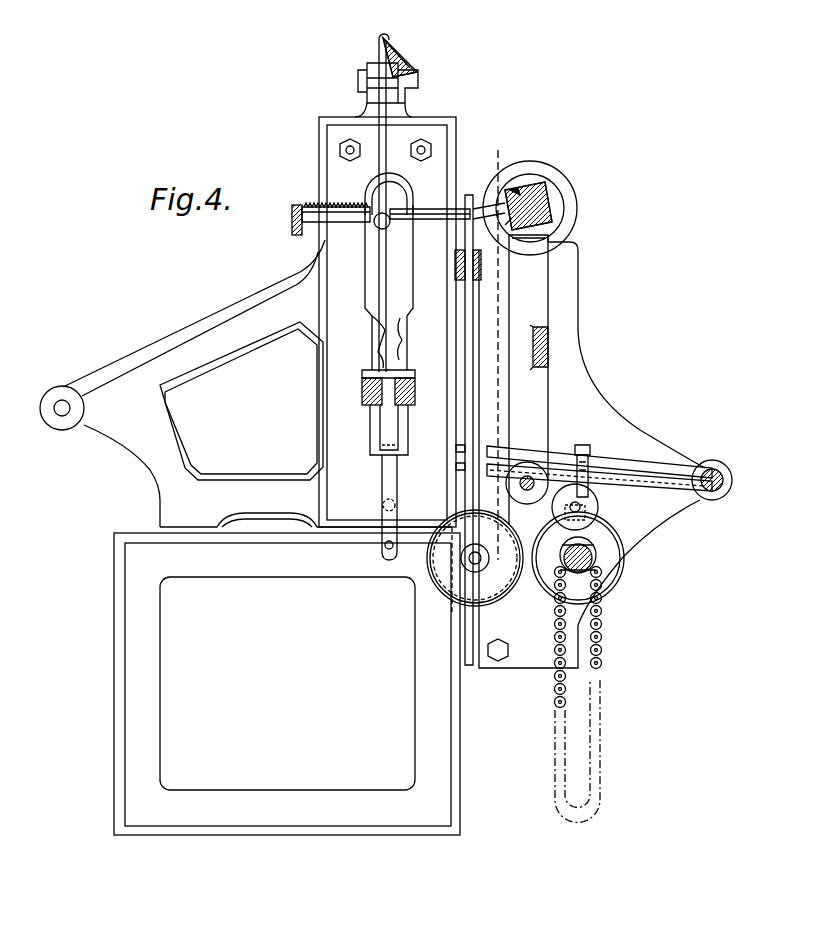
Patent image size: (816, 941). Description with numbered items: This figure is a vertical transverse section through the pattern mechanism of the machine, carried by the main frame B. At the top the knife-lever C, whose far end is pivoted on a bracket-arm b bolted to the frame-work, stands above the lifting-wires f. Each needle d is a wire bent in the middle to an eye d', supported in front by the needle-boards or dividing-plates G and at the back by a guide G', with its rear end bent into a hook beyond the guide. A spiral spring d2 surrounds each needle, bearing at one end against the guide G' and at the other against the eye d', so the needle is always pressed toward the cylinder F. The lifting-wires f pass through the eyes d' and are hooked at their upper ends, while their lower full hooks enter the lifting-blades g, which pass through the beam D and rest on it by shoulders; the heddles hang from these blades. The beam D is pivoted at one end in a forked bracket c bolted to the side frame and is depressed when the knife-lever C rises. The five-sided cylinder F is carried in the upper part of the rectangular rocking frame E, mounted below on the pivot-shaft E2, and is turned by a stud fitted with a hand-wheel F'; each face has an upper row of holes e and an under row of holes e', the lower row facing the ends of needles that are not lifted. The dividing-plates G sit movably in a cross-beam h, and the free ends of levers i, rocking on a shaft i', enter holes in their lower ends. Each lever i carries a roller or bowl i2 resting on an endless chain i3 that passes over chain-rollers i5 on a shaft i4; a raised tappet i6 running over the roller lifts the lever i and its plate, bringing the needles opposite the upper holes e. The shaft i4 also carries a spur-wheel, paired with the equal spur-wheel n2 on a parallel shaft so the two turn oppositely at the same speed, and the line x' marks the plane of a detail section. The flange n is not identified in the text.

The frame B is at (230, 495).
The bracket-arm b is at (366, 100).
The knife-lever C is at (400, 60).
The lifting-wires f is at (378, 38).
The needles d is at (404, 211).
The spiral spring d2 is at (340, 212).
The eye d' is at (402, 237).
The guide G' is at (286, 230).
The needle-boards or dividing-plates G is at (517, 431).
The cylinder F is at (533, 205).
The hand-wheel F' is at (548, 204).
The upper row of holes e is at (495, 183).
The under row of holes e' is at (491, 236).
The cross-beam h is at (481, 268).
The rocking frame E is at (607, 430).
The beam D is at (408, 405).
The lifting-blades g is at (381, 486).
The levers i is at (599, 469).
The shaft i' is at (719, 479).
The pivot-shaft E2 is at (520, 487).
The roller or bowl i2 is at (598, 504).
The forked bracket c is at (480, 555).
The wheel rim n is at (528, 590).
The spur-wheel n2 is at (498, 592).
The shaft i4 is at (594, 562).
The raised tappets i6 is at (612, 590).
The chain-rollers i5 is at (588, 553).
The endless chain i3 is at (604, 640).
The line X' X' x' is at (514, 420).